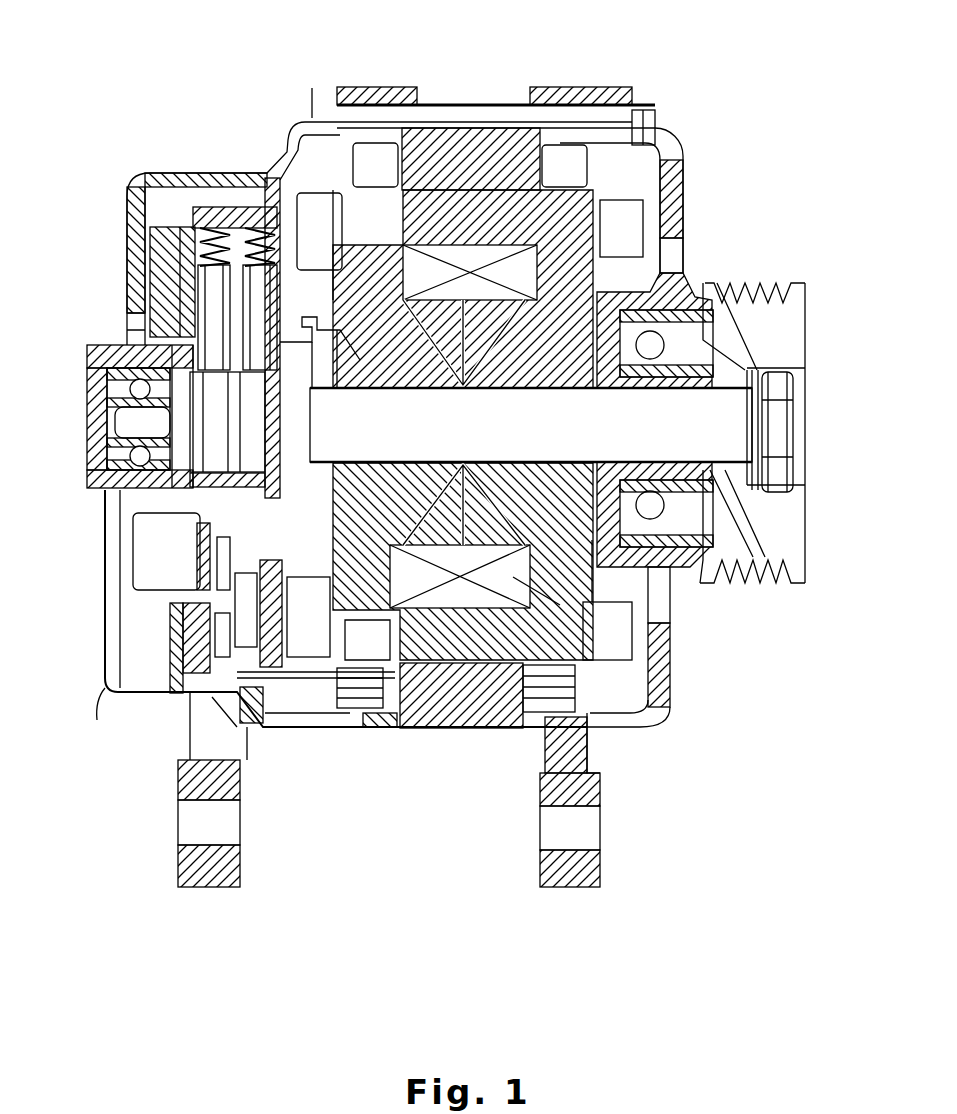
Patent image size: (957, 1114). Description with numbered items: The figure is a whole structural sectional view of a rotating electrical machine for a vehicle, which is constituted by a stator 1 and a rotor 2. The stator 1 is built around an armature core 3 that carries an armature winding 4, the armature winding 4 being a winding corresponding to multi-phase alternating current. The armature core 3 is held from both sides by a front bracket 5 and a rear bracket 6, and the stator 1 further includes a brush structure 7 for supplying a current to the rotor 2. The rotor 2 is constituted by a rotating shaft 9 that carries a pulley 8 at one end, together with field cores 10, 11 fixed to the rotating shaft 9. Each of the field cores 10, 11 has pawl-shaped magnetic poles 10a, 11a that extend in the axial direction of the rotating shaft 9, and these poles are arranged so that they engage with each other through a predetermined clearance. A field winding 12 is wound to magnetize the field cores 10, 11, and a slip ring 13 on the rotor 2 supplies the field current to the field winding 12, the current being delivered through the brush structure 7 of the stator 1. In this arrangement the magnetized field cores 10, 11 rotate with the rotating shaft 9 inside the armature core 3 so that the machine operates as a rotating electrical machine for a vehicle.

The stator 1 is at (440, 103).
The rotor 2 is at (568, 300).
The armature core 3 is at (442, 117).
The armature winding 4 is at (550, 135).
The front bracket 5 is at (666, 128).
The rear bracket 6 is at (363, 210).
The brush structure 7 is at (220, 213).
The pulley 8 is at (800, 304).
The rotating shaft 9 is at (793, 428).
The field core 10 is at (565, 560).
The pawl-shaped magnetic pole 10a is at (530, 615).
The field core 11 is at (357, 580).
The pawl-shaped magnetic pole 11a is at (422, 610).
The field winding 12 is at (513, 577).
The slip ring 13 is at (213, 418).